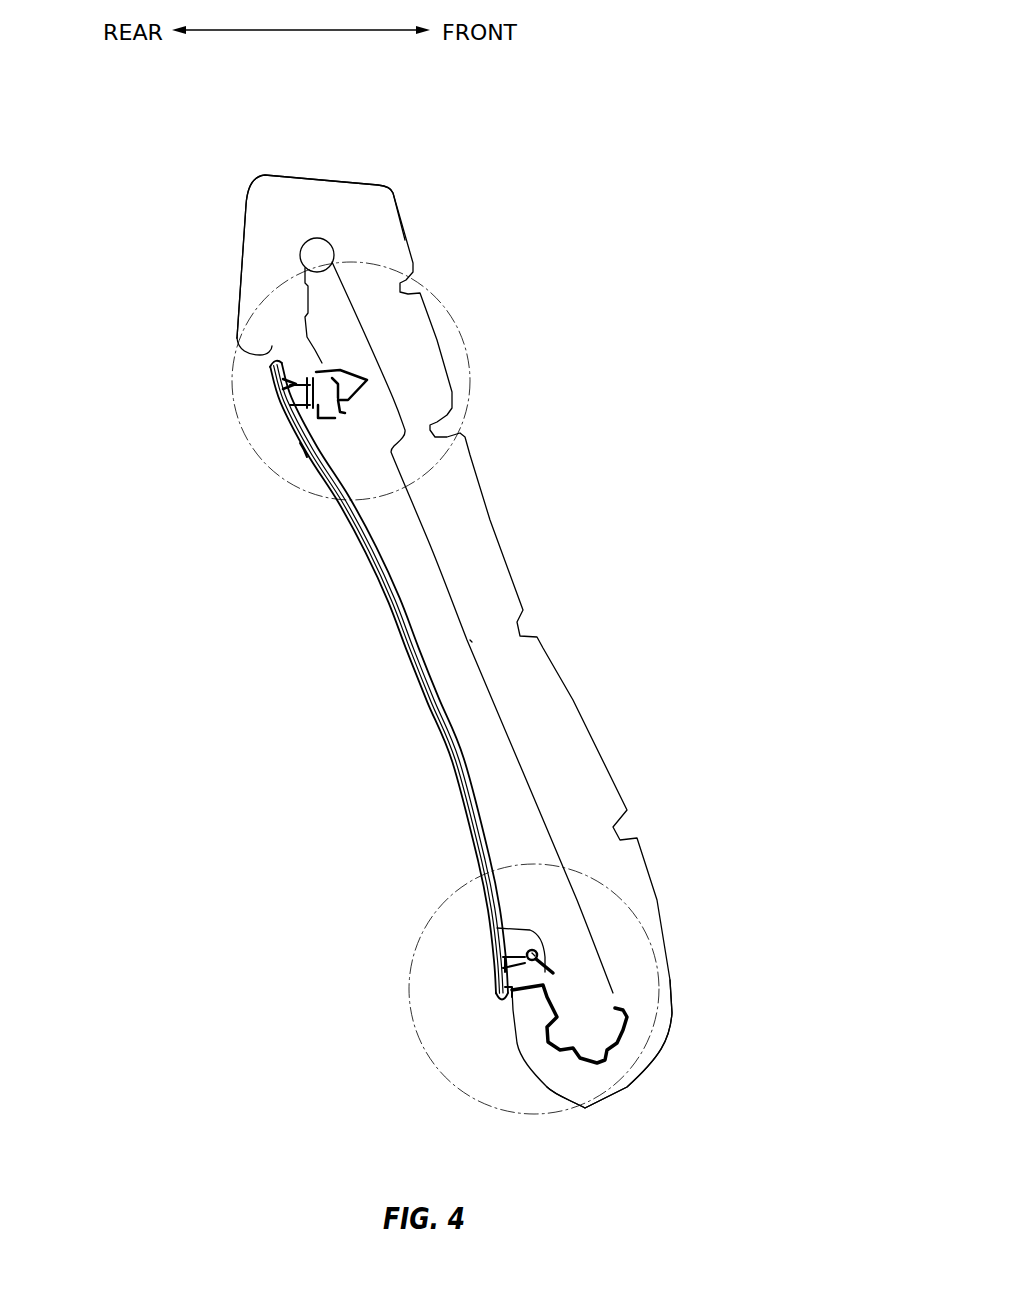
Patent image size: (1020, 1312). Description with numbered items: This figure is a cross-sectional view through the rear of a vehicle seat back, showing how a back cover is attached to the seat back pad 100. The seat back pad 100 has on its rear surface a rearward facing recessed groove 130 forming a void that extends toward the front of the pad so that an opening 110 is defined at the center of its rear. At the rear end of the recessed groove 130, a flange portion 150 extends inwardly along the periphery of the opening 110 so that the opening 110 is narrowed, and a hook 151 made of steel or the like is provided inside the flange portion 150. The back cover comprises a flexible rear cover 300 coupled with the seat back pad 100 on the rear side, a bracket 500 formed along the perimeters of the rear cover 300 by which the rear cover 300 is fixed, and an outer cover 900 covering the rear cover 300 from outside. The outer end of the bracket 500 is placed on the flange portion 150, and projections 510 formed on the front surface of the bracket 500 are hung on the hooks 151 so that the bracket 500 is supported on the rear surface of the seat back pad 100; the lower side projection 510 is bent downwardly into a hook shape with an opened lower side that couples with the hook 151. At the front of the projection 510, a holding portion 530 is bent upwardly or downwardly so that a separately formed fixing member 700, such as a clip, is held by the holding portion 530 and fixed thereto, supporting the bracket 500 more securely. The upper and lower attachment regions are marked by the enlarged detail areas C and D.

The seat back pad 100 is at (246, 181).
The opening 110 is at (420, 583).
The recessed groove 130 is at (490, 669).
The flange portion 150 is at (262, 262).
The hook 151 is at (310, 328).
The rear cover 300 is at (480, 832).
The bracket 500 is at (283, 382).
The projection 510 is at (302, 447).
The holding portion 530 is at (338, 410).
The fixing member 700 is at (350, 372).
The outer cover 900 is at (457, 793).
The detail region C is at (232, 430).
The detail region D is at (410, 1005).